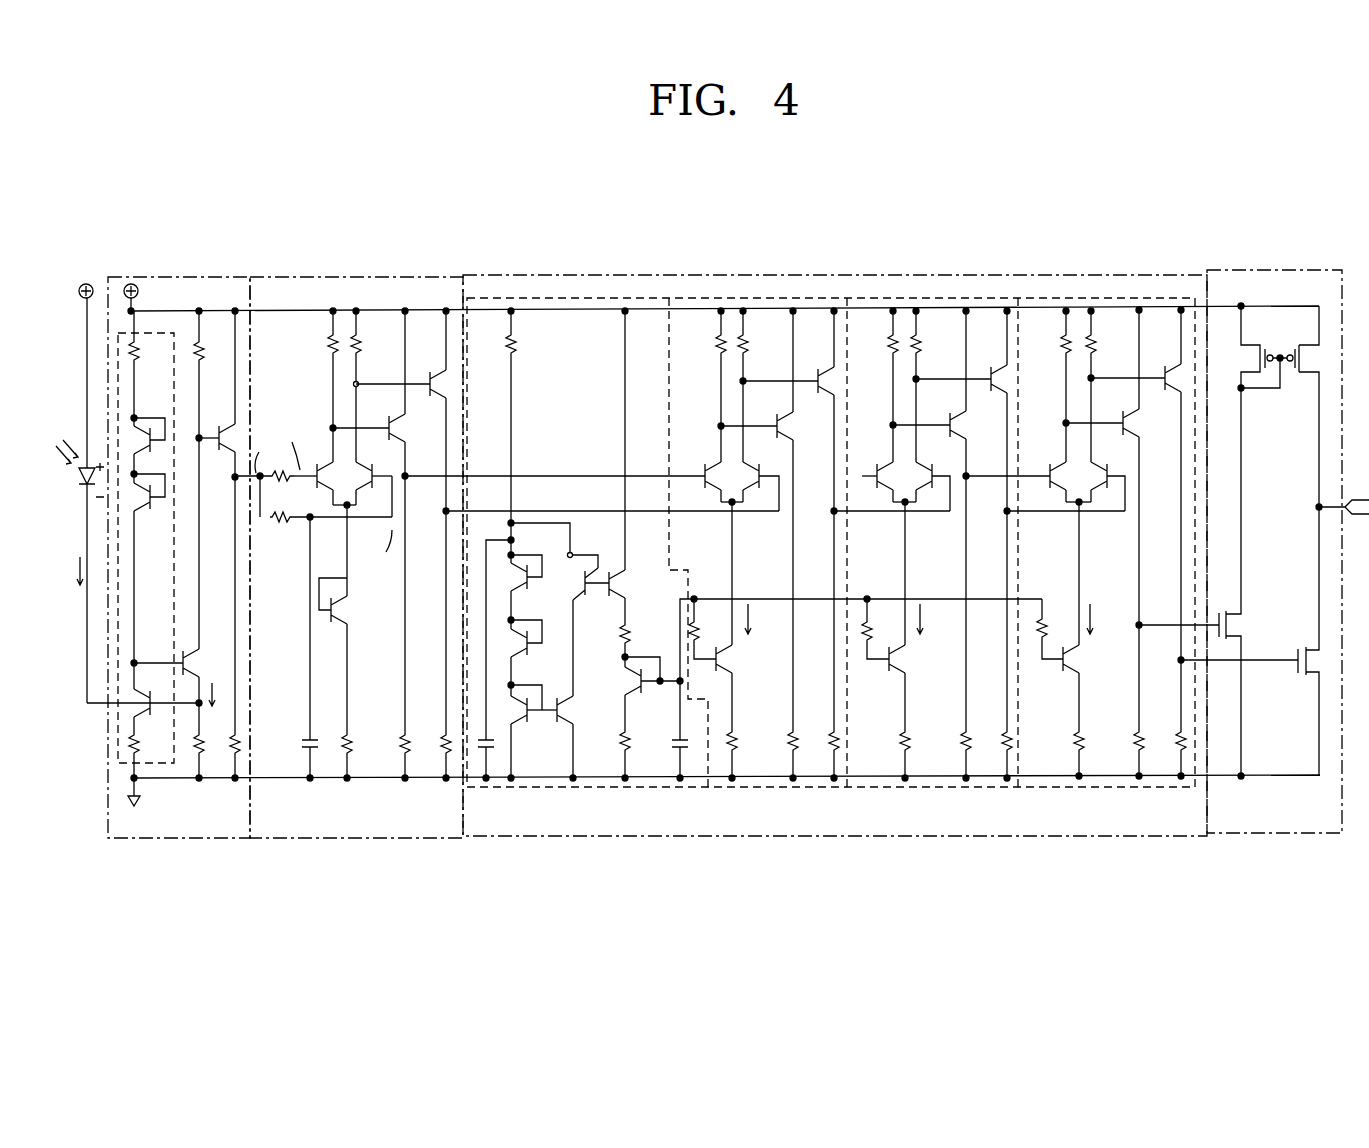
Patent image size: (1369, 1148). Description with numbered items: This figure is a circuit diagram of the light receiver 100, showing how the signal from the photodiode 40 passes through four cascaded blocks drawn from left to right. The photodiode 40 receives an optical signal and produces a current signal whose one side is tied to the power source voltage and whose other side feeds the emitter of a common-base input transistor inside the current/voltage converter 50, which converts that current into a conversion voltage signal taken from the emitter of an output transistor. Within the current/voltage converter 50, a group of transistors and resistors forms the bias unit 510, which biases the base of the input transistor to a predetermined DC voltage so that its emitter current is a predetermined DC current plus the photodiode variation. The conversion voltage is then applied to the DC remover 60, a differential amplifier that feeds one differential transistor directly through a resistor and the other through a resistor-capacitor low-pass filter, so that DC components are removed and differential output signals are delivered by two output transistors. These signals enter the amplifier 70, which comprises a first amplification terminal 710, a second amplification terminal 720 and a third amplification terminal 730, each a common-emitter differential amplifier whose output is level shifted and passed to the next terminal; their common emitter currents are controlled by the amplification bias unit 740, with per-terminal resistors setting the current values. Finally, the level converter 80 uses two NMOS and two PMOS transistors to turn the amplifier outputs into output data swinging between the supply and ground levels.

The photodiode 40 is at (84, 495).
The current/voltage converter 50 is at (186, 277).
The DC remover 60 is at (356, 277).
The amplifier 70 is at (841, 275).
The level converter 80 is at (1268, 270).
The light receiver 100 is at (1342, 838).
The bias unit 510 is at (165, 766).
The first amplification terminal 710 is at (773, 788).
The second amplification terminal 720 is at (937, 788).
The third amplification terminal 730 is at (1107, 788).
The amplification bias unit 740 is at (595, 788).